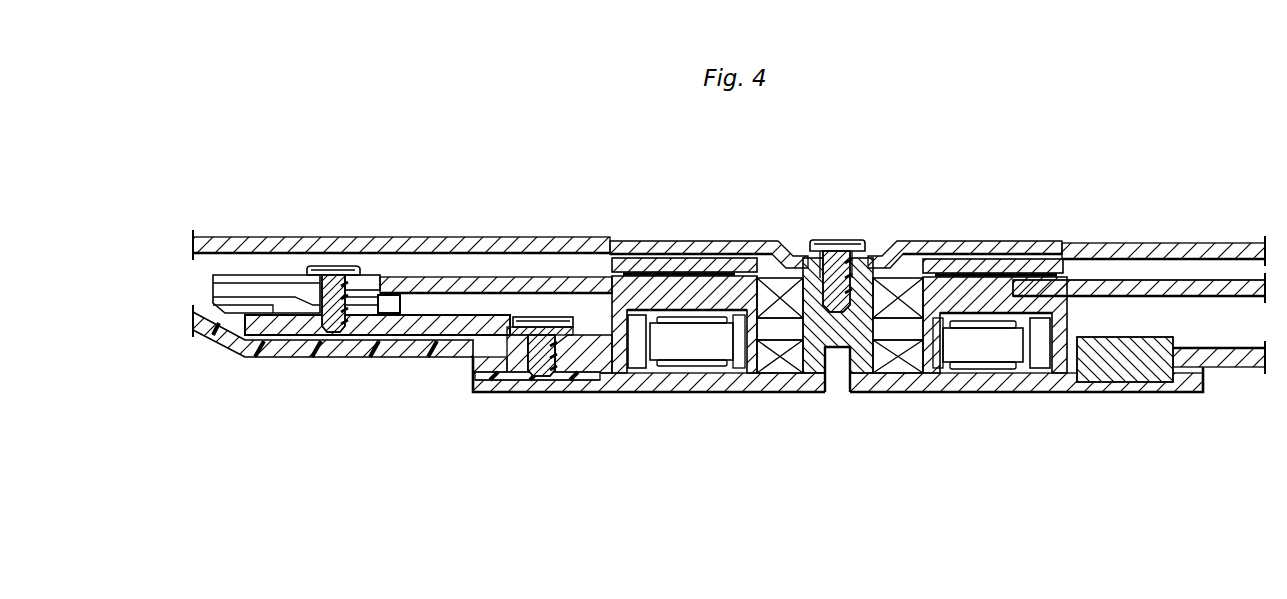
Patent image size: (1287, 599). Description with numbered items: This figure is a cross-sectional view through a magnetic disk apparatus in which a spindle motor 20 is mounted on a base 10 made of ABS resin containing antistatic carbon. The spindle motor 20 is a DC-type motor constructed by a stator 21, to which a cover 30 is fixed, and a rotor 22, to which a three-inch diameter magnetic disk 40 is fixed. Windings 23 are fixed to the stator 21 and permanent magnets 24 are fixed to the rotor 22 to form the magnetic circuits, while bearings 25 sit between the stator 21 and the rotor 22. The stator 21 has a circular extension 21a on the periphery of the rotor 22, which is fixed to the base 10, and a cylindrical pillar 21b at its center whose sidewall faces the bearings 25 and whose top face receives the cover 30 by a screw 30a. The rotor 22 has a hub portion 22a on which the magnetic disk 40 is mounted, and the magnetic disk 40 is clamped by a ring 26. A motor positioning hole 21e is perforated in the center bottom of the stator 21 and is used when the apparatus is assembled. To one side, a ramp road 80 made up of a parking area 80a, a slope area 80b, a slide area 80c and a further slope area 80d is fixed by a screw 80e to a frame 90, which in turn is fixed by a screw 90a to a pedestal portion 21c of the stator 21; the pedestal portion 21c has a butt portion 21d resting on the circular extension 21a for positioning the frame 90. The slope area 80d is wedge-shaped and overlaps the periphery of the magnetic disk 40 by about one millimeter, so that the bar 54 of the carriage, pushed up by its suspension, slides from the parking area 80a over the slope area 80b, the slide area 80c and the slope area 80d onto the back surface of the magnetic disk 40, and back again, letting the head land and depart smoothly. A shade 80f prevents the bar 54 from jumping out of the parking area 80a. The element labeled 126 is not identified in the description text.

The base 10 is at (193, 447).
The spindle motor 20 is at (1063, 447).
The stator 21 is at (817, 360).
The circular extension 21a is at (1108, 367).
The cylindrical pillar 21b is at (863, 277).
The pedestal portion 21c is at (513, 357).
The butt portion 21d is at (580, 331).
The motor positioning hole 21e is at (838, 362).
The rotor 22 is at (700, 282).
The hub portion 22a is at (636, 276).
The windings 23 is at (693, 343).
The permanent magnets 24 is at (638, 357).
The bearings 25 is at (780, 368).
The ring 26 is at (1023, 268).
The yoke top plate 126 is at (658, 266).
The cover 30 is at (738, 241).
The screw 30a is at (833, 260).
The magnetic disk 40 is at (490, 287).
The bar 54 is at (388, 310).
The ramp road 80 is at (353, 271).
The parking area 80a is at (300, 298).
The slope area 80b is at (312, 296).
The slide area 80c is at (358, 300).
The slope area 80d is at (385, 300).
The screw 80e is at (333, 318).
The shade 80f is at (230, 312).
The frame 90 is at (436, 324).
The screw 90a is at (540, 357).